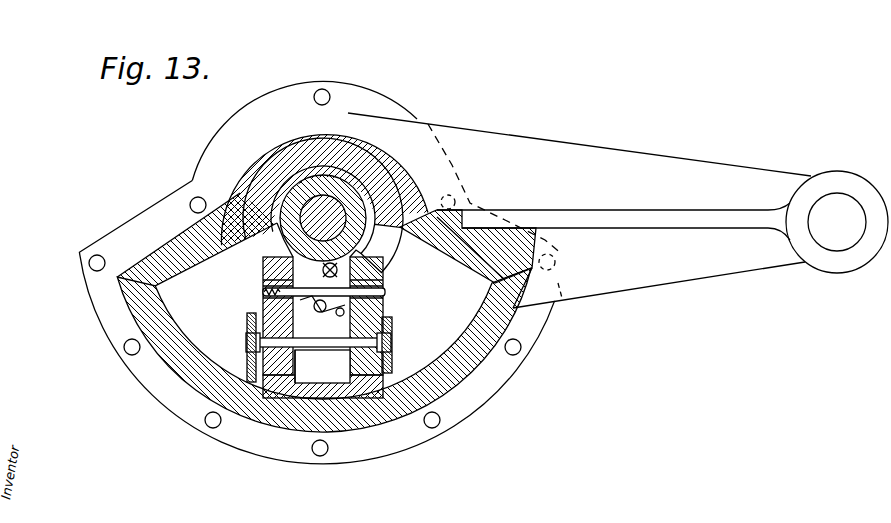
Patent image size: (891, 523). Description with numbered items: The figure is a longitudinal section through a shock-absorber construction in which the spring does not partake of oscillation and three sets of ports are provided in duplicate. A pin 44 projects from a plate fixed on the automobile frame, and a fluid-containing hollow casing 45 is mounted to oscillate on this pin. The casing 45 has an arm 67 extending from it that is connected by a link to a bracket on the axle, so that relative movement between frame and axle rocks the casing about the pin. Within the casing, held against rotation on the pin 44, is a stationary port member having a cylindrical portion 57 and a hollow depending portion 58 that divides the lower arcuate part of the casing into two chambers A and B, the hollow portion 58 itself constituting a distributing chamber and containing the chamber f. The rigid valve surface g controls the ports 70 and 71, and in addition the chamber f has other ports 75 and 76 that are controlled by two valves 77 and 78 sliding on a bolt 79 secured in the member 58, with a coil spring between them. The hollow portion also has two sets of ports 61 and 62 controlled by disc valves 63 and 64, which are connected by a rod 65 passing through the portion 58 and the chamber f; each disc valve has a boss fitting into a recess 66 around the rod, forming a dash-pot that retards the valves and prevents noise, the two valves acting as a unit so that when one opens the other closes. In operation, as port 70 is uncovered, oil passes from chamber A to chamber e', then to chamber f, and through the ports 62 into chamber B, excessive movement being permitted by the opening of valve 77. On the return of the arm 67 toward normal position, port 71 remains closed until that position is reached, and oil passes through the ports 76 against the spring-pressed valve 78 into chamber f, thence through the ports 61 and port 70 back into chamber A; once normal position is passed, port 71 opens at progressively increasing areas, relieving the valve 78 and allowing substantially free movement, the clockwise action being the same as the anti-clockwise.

The hollow casing 45 is at (267, 142).
The cylindrical portion 57 is at (250, 177).
The chamber e' is at (380, 204).
The pin 44 is at (345, 214).
The bolt 79 is at (381, 248).
The port 71 is at (392, 257).
The ports 76 is at (386, 283).
The chamber B is at (424, 311).
The chamber A is at (197, 248).
The rigid valve surface g is at (262, 245).
The port 70 is at (262, 260).
The ports 75 is at (258, 293).
The valve 77 is at (303, 306).
The valve 78 is at (345, 317).
The recess 66 is at (257, 333).
The disc valve 63 is at (247, 360).
The disc valve 64 is at (393, 358).
The rod 65 is at (310, 350).
The ports 61 is at (277, 388).
The chamber f is at (312, 373).
The ports 62 is at (388, 423).
The hollow depending portion 58 is at (353, 427).
The arm 67 is at (663, 277).